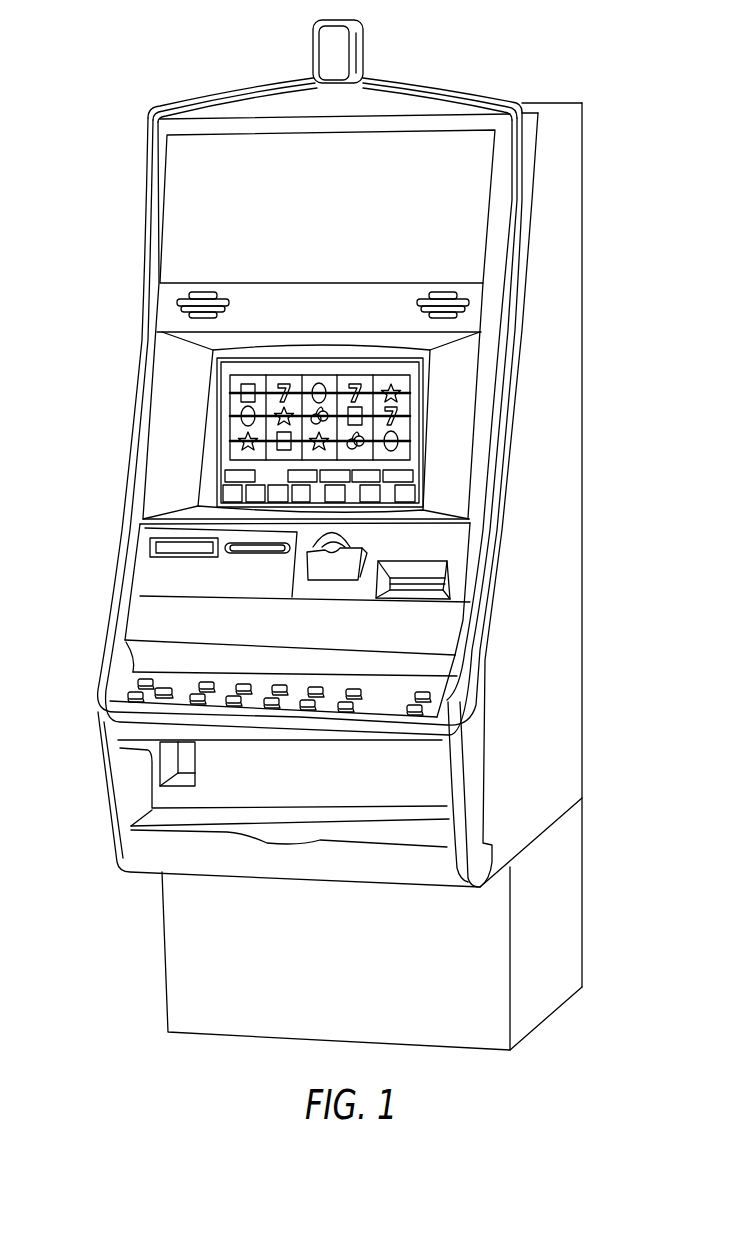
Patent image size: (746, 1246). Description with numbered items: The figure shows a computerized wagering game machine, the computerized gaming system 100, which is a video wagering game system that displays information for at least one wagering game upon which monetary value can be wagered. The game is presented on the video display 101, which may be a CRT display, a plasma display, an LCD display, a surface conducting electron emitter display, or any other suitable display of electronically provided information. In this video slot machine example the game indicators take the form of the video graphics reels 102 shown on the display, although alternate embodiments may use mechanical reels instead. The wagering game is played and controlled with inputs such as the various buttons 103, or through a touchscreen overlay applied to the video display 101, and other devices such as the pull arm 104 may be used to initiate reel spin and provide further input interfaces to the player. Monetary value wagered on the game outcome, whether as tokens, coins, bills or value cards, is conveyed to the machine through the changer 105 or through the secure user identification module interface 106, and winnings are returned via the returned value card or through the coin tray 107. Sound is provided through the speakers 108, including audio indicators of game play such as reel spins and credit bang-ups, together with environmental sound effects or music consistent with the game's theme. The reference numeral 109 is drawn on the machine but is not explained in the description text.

The computerized gaming system 100 is at (91, 50).
The video display 101 is at (212, 441).
The video graphics reels 102 is at (188, 197).
The buttons 103 is at (312, 380).
The pull arm 104 is at (130, 684).
The changer 105 is at (416, 484).
The secure user identification module interface 106 is at (368, 555).
The coin tray 107 is at (250, 550).
The speakers 108 is at (150, 866).
The speakers 109 is at (465, 309).